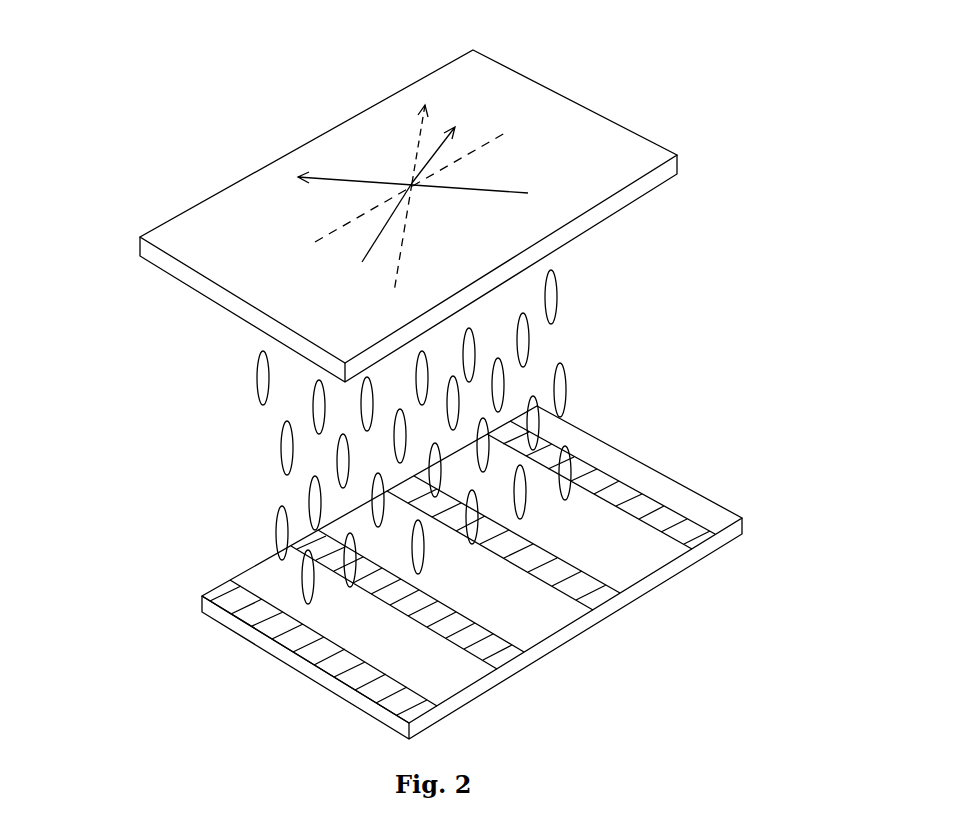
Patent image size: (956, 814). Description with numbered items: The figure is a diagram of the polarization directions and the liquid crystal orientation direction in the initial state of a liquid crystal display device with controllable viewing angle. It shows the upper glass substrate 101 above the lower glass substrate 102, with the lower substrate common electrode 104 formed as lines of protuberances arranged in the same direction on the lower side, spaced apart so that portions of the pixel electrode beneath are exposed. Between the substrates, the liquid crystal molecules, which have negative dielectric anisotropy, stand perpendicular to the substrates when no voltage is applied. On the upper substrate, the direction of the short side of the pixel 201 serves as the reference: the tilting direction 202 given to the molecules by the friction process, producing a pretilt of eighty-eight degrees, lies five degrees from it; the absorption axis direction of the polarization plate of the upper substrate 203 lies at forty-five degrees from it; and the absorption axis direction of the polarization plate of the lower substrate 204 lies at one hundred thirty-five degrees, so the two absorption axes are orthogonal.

The upper glass substrate 101 is at (185, 240).
The lower glass substrate 102 is at (637, 560).
The lower substrate common electrode 104 is at (603, 592).
The direction of the short side of the pixel 201 is at (487, 143).
The tilting direction 202 is at (440, 135).
The absorption axis direction of the polarization plate of the upper substrate 203 is at (415, 118).
The absorption axis direction of the polarization plate of the lower substrate 204 is at (298, 172).